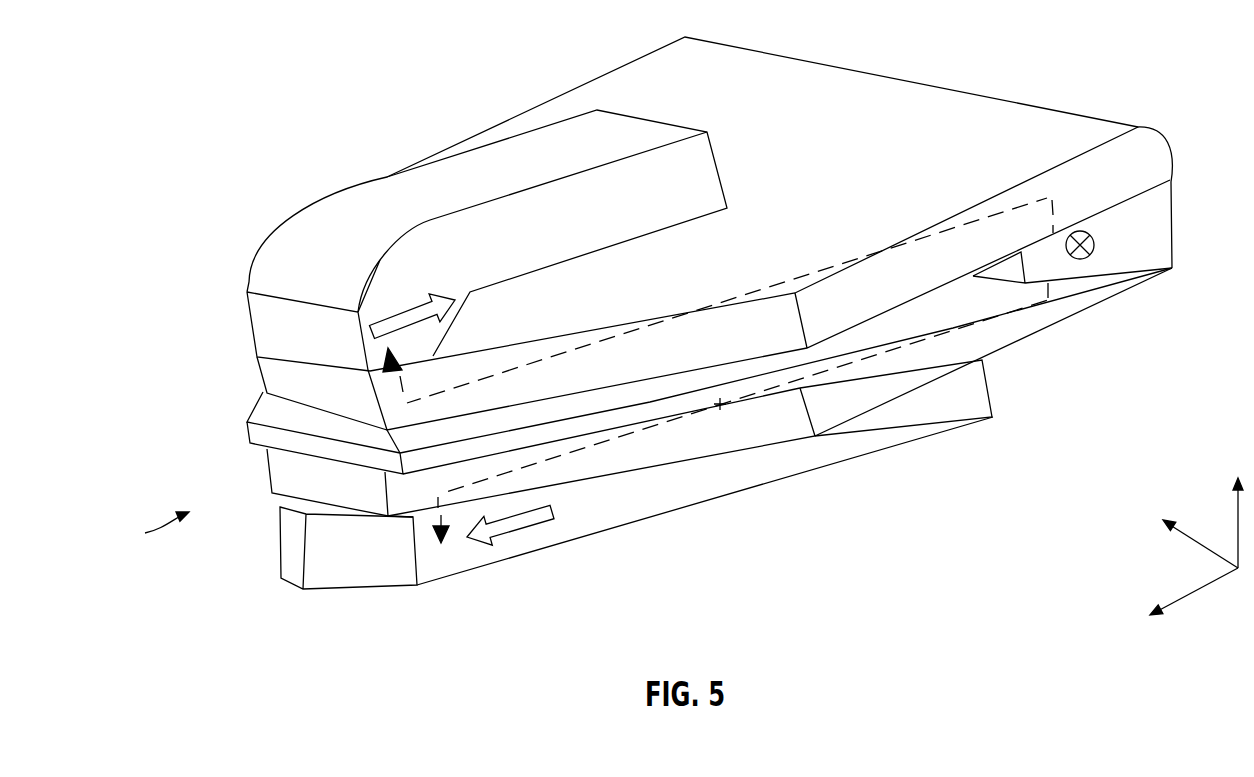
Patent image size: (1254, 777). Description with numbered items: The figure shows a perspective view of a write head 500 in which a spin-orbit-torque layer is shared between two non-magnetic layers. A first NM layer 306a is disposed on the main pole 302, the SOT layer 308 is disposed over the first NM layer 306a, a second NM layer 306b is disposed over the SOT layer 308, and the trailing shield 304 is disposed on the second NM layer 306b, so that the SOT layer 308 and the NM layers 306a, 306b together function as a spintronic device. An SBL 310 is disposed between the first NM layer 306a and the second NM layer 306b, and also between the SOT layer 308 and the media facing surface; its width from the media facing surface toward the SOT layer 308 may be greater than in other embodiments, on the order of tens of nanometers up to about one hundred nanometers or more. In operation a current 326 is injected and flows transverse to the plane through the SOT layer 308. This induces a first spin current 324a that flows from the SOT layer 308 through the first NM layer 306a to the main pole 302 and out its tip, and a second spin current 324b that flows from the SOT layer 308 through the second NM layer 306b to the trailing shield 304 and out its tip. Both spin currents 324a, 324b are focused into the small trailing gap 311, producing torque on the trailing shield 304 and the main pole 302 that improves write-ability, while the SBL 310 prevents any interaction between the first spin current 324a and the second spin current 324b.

The write head 500 is at (233, 92).
The main pole 302 is at (375, 569).
The trailing shield 304 is at (580, 237).
The first NM layer 306a is at (858, 400).
The second NM layer 306b is at (735, 284).
The SOT layer 308 is at (1158, 213).
The SBL 310 is at (502, 442).
The trailing gap 311 is at (224, 386).
The first spin current 324a is at (970, 330).
The second spin current 324b is at (921, 238).
The current 326 is at (1092, 249).